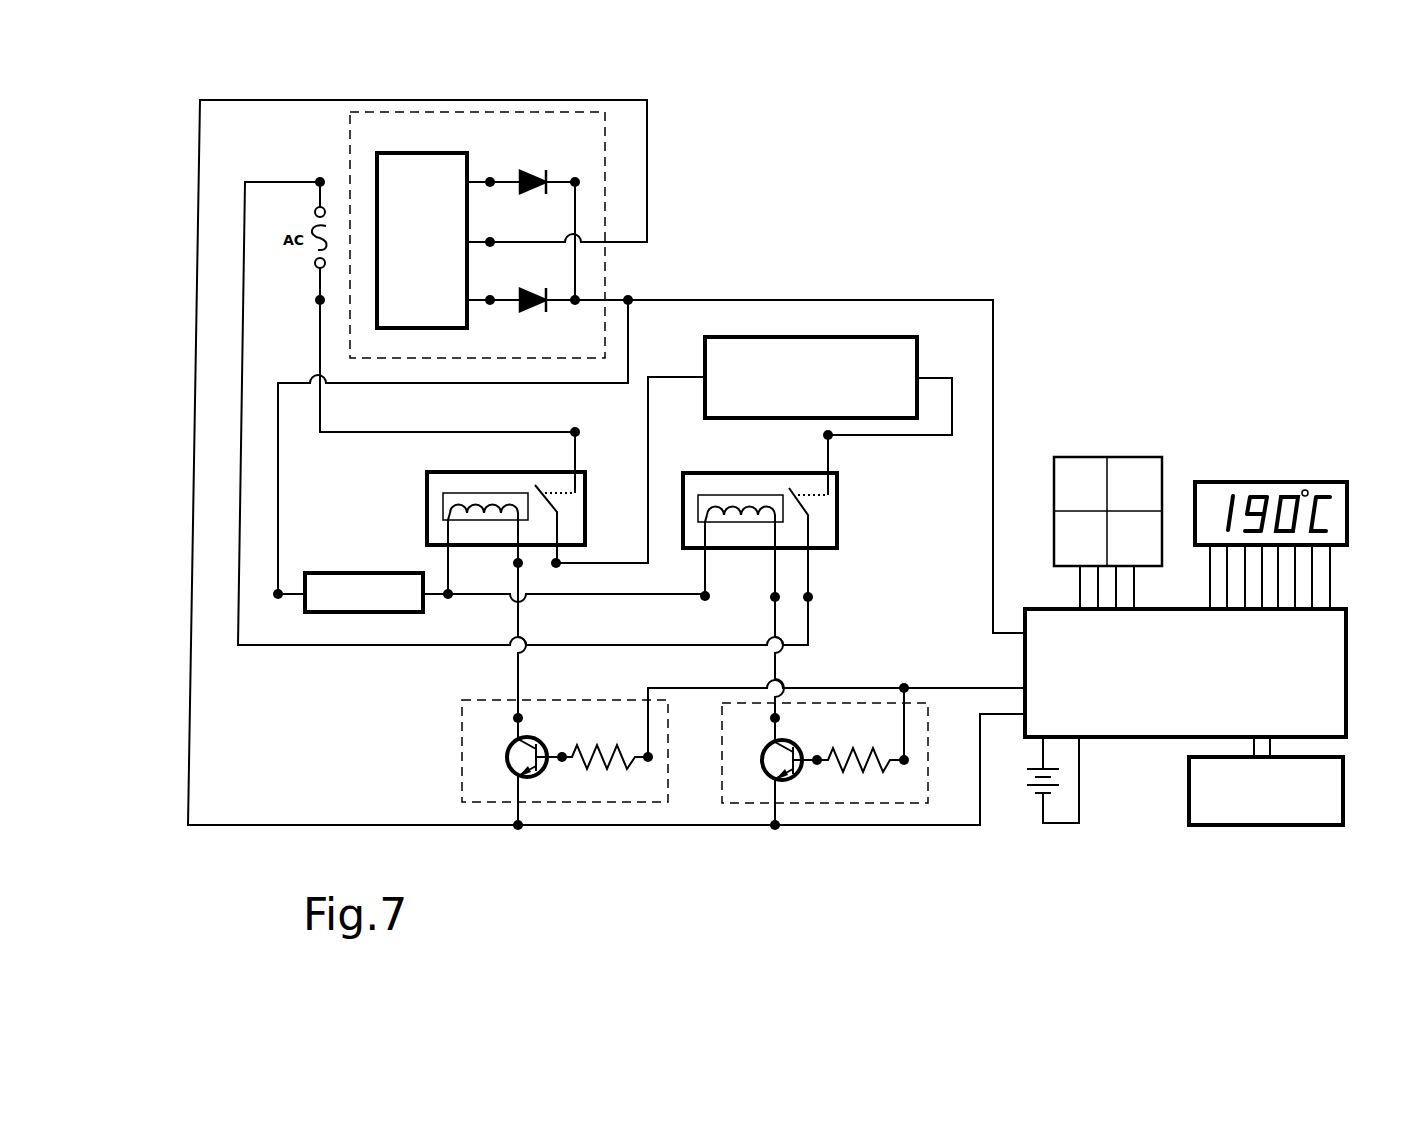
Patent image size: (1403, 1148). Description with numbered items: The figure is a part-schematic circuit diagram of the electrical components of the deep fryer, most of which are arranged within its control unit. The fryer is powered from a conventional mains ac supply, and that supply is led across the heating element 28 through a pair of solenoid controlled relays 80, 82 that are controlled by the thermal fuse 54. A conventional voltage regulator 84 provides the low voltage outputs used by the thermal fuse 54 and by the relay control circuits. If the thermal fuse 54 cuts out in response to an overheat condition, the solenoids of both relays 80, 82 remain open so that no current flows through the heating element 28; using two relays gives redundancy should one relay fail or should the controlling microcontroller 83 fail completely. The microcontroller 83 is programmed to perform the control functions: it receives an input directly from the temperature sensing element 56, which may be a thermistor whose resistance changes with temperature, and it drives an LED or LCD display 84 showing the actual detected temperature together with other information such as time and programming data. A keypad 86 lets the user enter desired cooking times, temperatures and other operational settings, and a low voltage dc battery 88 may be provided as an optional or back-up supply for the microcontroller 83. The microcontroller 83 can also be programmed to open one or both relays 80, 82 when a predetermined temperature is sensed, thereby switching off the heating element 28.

The voltage regulator 84 is at (582, 113).
The heating element 28 is at (812, 337).
The relay 80 is at (477, 472).
The relay 82 is at (757, 473).
The thermal fuse 54 is at (346, 573).
The keypad 86 is at (1152, 457).
The microcontroller 83 is at (1346, 633).
The temperature sensing element 56 is at (1345, 784).
The battery 88 is at (1035, 810).